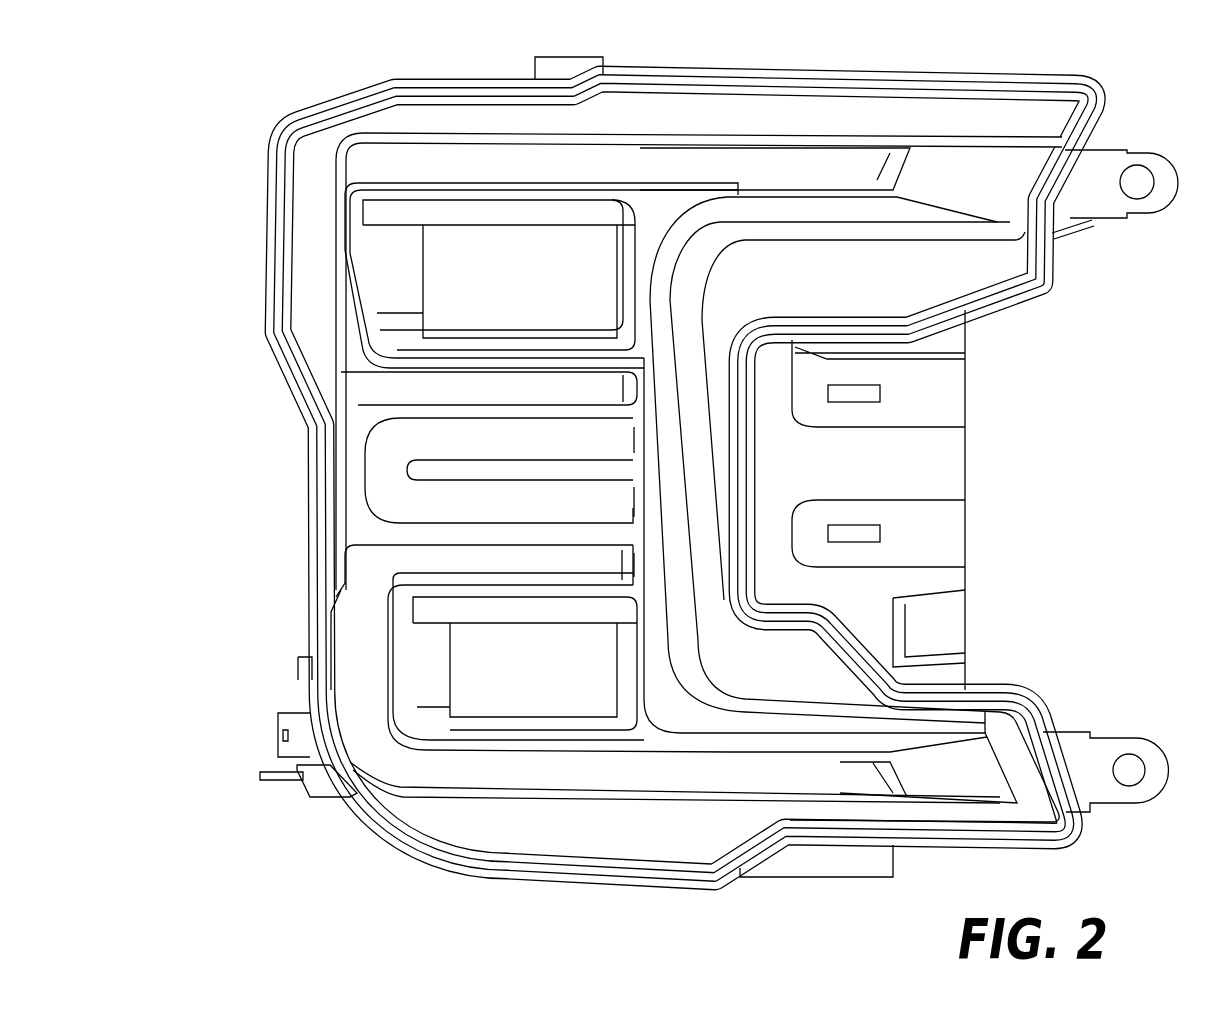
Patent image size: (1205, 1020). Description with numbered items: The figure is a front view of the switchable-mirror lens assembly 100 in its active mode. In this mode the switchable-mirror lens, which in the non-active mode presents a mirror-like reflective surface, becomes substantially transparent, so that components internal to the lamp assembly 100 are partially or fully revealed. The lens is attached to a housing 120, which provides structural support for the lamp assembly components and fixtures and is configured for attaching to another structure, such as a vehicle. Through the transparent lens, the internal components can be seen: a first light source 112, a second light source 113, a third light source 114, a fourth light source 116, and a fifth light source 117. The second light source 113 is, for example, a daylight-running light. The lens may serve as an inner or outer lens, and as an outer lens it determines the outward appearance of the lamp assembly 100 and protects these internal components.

The switchable-mirror lens assembly 100 is at (170, 97).
The first light source 112 is at (472, 270).
The second light source 113 is at (322, 330).
The third light source 114 is at (388, 465).
The fourth light source 116 is at (477, 683).
The fifth light source 117 is at (343, 618).
The housing 120 is at (950, 463).